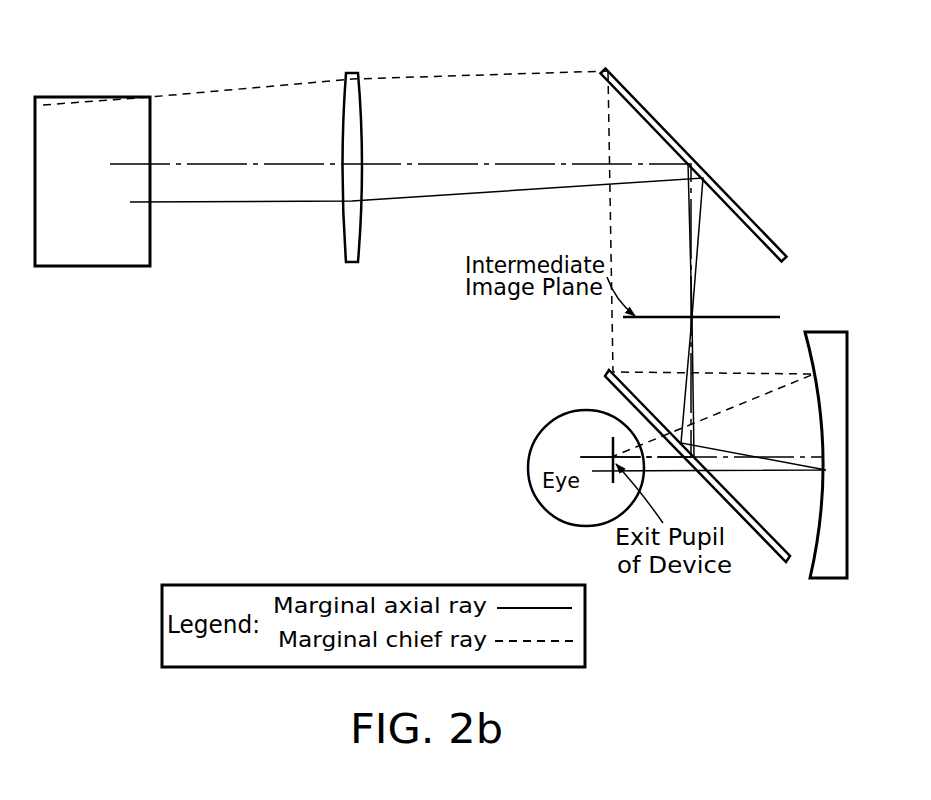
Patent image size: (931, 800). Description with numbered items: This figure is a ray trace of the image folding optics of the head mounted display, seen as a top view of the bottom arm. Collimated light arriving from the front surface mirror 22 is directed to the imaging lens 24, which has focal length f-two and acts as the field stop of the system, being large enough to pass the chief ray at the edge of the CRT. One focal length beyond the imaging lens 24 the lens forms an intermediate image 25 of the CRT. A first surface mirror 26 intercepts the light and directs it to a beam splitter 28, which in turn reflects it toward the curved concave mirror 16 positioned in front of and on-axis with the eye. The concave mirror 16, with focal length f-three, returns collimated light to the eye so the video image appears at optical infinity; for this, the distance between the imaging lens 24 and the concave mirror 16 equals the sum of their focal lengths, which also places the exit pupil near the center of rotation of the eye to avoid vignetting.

The front surface mirror 22 is at (97, 231).
The imaging lens 24 is at (364, 130).
The first surface mirror 26 is at (655, 112).
The intermediate image 25 is at (736, 315).
The concave mirror 16 is at (826, 330).
The beam splitter 28 is at (759, 515).